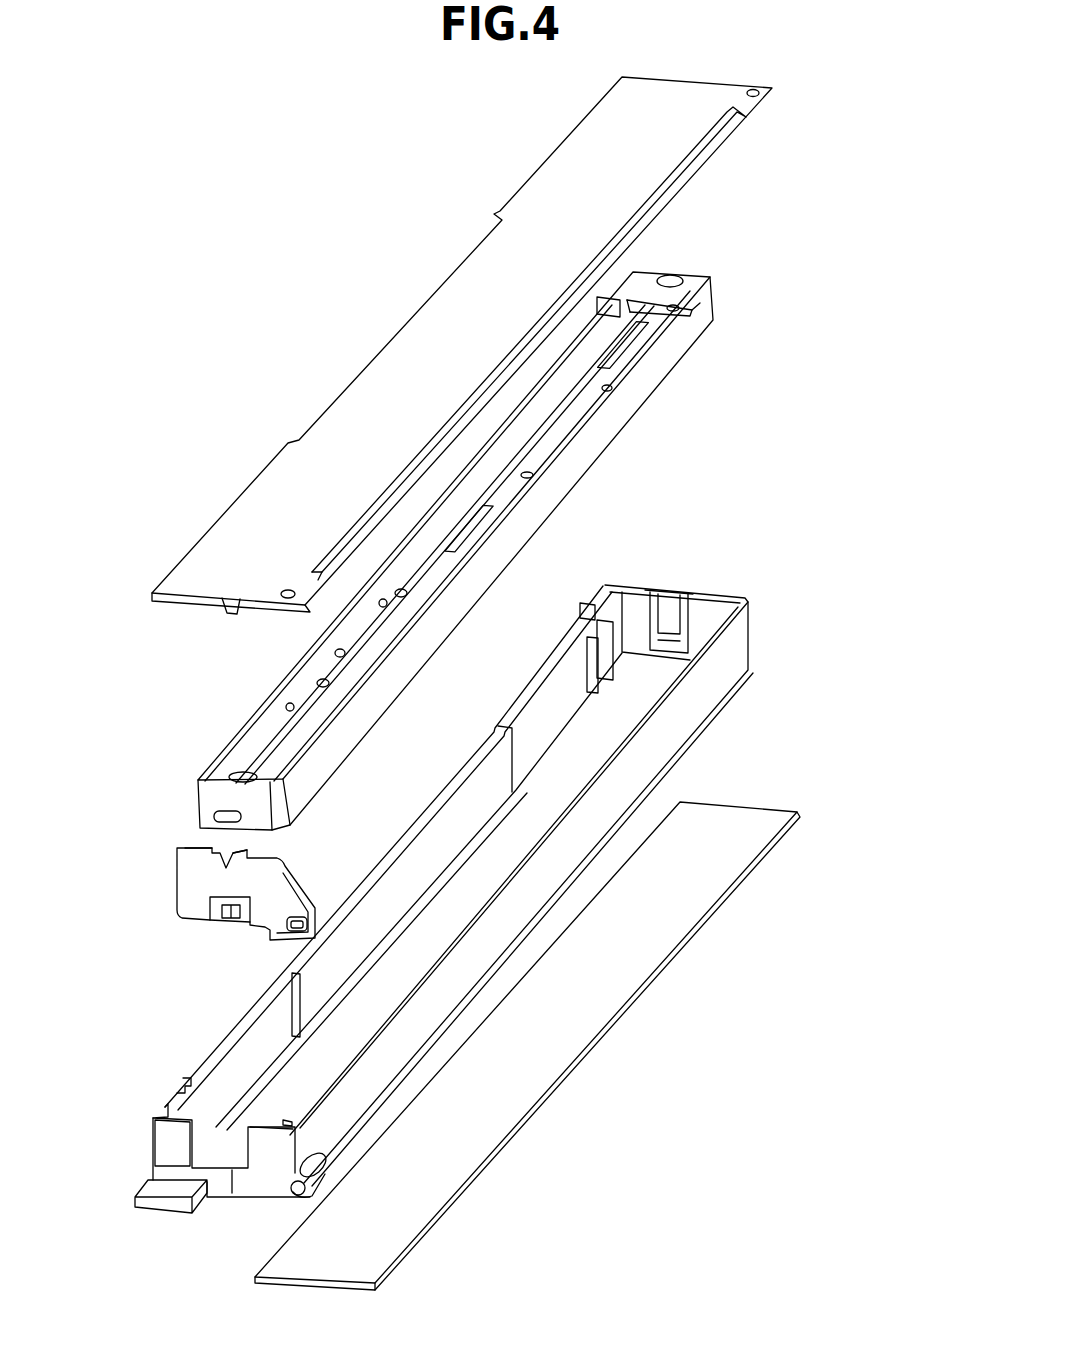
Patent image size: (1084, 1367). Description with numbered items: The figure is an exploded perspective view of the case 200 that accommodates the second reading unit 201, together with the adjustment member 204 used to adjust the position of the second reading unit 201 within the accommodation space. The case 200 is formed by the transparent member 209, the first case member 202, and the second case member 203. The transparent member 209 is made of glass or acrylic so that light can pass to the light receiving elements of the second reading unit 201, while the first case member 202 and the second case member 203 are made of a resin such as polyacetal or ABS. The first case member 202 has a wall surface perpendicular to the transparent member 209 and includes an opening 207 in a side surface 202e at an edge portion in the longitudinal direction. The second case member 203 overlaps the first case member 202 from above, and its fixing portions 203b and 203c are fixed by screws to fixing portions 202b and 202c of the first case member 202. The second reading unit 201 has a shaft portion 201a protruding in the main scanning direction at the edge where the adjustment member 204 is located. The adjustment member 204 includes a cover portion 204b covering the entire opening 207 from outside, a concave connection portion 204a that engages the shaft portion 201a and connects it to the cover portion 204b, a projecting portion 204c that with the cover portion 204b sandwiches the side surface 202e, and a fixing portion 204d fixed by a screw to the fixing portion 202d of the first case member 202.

The case 200 is at (897, 390).
The second reading unit 201 is at (399, 551).
The shaft portion 201a is at (213, 812).
The first case member 202 is at (467, 861).
The fixing portion 202b is at (285, 1125).
The fixing portion 202c is at (743, 600).
The fixing portion 202d is at (315, 1170).
The side surface 202e is at (173, 1152).
The second case member 203 is at (520, 325).
The fixing portion 203b is at (283, 590).
The fixing portion 203c is at (755, 90).
The adjustment member 204 is at (218, 906).
The connection portion 204a is at (227, 857).
The cover portion 204b is at (200, 875).
The projecting portion 204c is at (200, 848).
The fixing portion 204d is at (297, 927).
The opening 207 is at (258, 1140).
The transparent member 209 is at (720, 833).